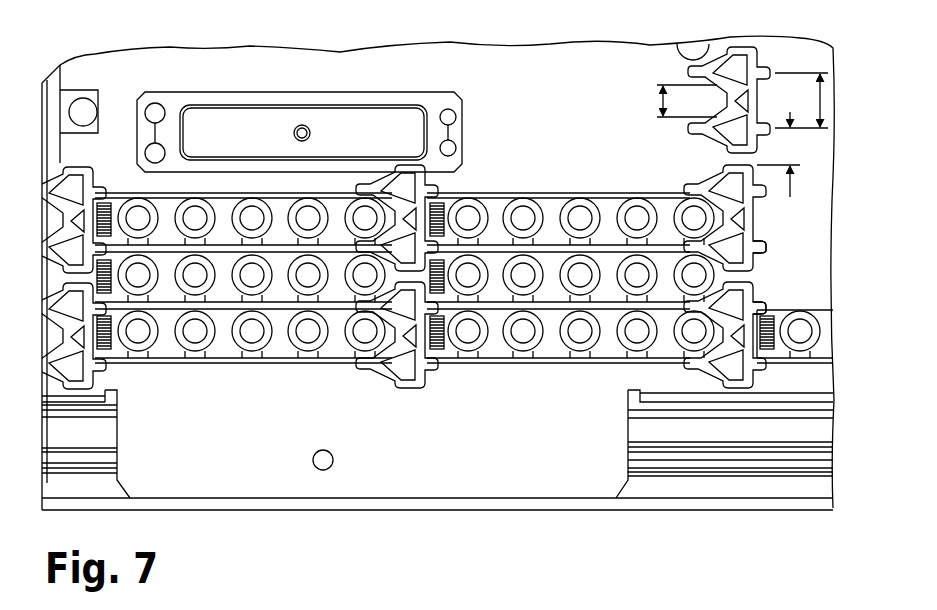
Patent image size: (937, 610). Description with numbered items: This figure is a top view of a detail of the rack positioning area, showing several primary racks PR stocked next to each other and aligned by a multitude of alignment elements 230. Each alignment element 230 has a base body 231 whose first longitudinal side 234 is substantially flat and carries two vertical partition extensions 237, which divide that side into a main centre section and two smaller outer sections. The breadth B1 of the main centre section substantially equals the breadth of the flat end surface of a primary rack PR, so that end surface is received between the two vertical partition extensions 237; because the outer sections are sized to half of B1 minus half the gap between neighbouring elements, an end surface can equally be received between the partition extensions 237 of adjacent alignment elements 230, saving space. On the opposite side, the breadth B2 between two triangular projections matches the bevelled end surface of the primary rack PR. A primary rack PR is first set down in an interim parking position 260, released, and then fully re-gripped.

The alignment element 230 is at (102, 167).
The base body 231 is at (737, 62).
The first longitudinal side 234 is at (755, 222).
The vertical partition extension 237 is at (768, 248).
The parking position 260 is at (340, 92).
The primary rack PR is at (504, 193).
The breadth of the main centre section B1 is at (823, 100).
The breadth of the second main centre section B2 is at (660, 97).